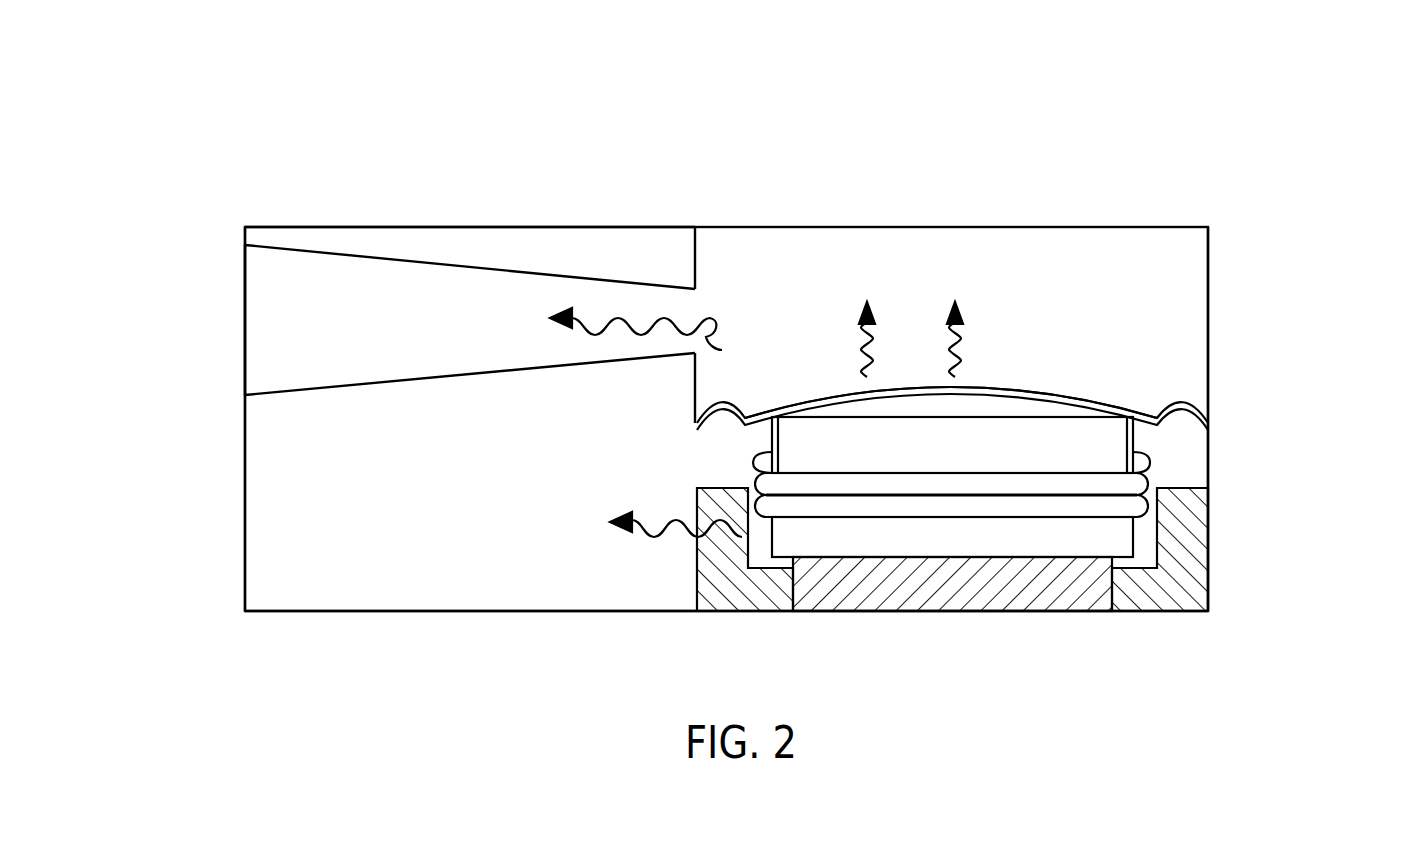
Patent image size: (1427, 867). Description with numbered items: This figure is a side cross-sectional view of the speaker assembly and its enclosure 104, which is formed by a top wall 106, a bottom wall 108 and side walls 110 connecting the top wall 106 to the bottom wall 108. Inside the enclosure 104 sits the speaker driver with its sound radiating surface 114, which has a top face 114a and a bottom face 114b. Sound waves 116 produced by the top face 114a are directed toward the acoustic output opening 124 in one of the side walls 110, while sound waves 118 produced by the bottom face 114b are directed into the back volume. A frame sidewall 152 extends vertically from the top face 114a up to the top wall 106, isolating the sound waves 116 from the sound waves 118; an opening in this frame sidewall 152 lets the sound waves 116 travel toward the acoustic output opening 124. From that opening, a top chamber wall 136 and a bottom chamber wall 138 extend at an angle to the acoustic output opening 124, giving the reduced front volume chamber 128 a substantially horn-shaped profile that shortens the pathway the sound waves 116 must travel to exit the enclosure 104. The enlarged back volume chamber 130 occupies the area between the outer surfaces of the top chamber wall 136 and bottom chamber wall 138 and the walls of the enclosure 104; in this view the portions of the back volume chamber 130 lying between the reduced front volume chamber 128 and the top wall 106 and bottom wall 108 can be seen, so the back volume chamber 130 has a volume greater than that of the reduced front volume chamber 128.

The speaker enclosure 104 is at (1127, 220).
The top wall 106 is at (565, 227).
The bottom wall 108 is at (626, 613).
The side walls 110 is at (245, 555).
The sound radiating surface 114 is at (1115, 400).
The top face 114a is at (1032, 388).
The bottom face 114b is at (1080, 403).
The sound waves 116 is at (655, 335).
The sound waves 118 is at (681, 536).
The acoustic output opening 124 is at (231, 319).
The reduced front volume chamber 128 is at (603, 303).
The back volume chamber 130 is at (356, 490).
The top chamber wall 136 is at (492, 270).
The bottom chamber wall 138 is at (495, 372).
The frame sidewall 152 is at (697, 250).